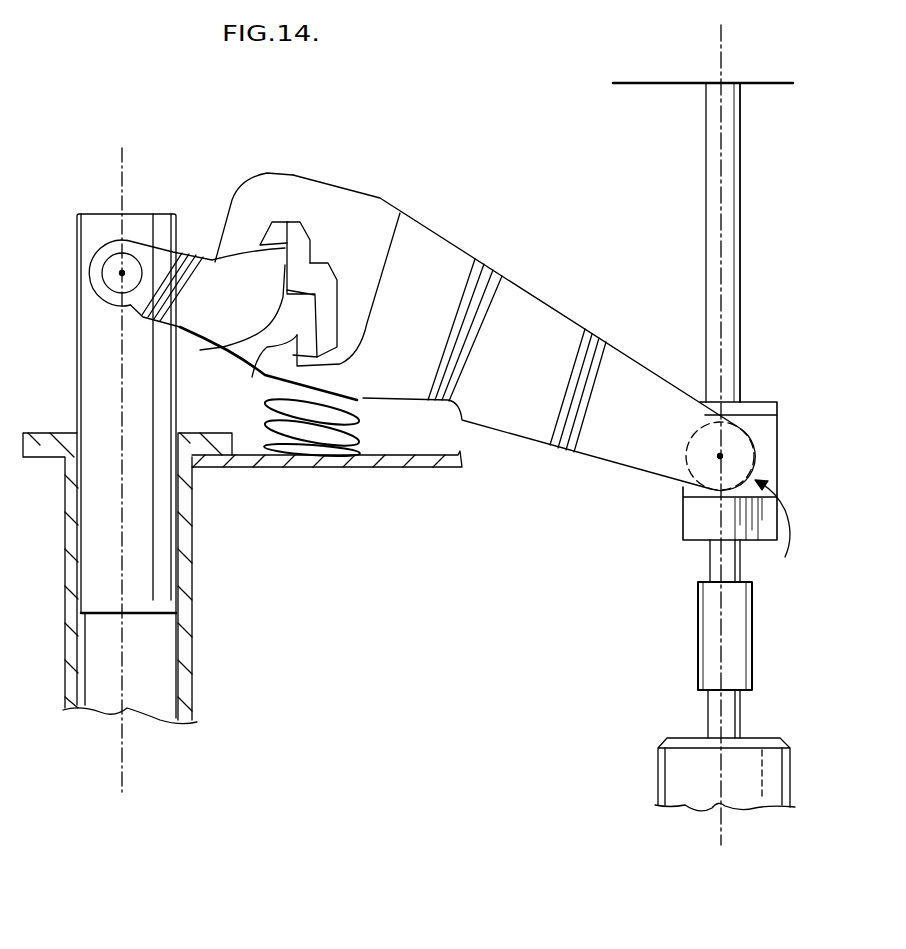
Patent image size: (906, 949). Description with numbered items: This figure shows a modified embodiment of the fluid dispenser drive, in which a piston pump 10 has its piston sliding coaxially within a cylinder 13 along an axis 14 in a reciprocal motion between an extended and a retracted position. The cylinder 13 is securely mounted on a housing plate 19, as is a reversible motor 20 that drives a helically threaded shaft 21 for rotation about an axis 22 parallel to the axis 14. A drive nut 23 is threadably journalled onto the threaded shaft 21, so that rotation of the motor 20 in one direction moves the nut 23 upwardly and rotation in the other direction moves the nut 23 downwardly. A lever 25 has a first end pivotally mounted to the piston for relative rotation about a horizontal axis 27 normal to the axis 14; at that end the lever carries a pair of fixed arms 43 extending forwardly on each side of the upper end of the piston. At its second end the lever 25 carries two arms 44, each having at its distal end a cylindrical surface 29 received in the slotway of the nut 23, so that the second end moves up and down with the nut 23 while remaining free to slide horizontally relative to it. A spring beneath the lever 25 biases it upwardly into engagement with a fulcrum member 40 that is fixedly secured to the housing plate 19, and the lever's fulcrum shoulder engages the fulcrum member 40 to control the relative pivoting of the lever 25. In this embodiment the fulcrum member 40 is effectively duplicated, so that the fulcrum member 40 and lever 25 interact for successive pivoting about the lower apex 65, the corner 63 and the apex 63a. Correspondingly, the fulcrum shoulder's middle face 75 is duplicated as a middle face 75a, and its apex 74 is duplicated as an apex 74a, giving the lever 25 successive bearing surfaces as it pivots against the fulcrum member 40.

The piston pump 10 is at (93, 217).
The cylinder 13 is at (188, 573).
The axis 14 is at (122, 163).
The housing plate 19 is at (280, 468).
The reversible motor 20 is at (670, 768).
The helically threaded shaft 21 is at (707, 138).
The axis 22 is at (718, 35).
The drive nut 23 is at (683, 525).
The lever 25 is at (432, 208).
The horizontal axis 27 is at (122, 273).
The cylindrical surfaces 29 is at (775, 534).
The fulcrum member 40 is at (333, 262).
The fixed arms 43 is at (192, 312).
The arms 44 is at (665, 448).
The corner 63 is at (333, 277).
The apex 63a is at (295, 222).
The lower apex 65 is at (317, 357).
The apex 74 is at (226, 350).
The apex 74a is at (282, 252).
The middle face 75 is at (252, 377).
The middle face 75a is at (285, 265).